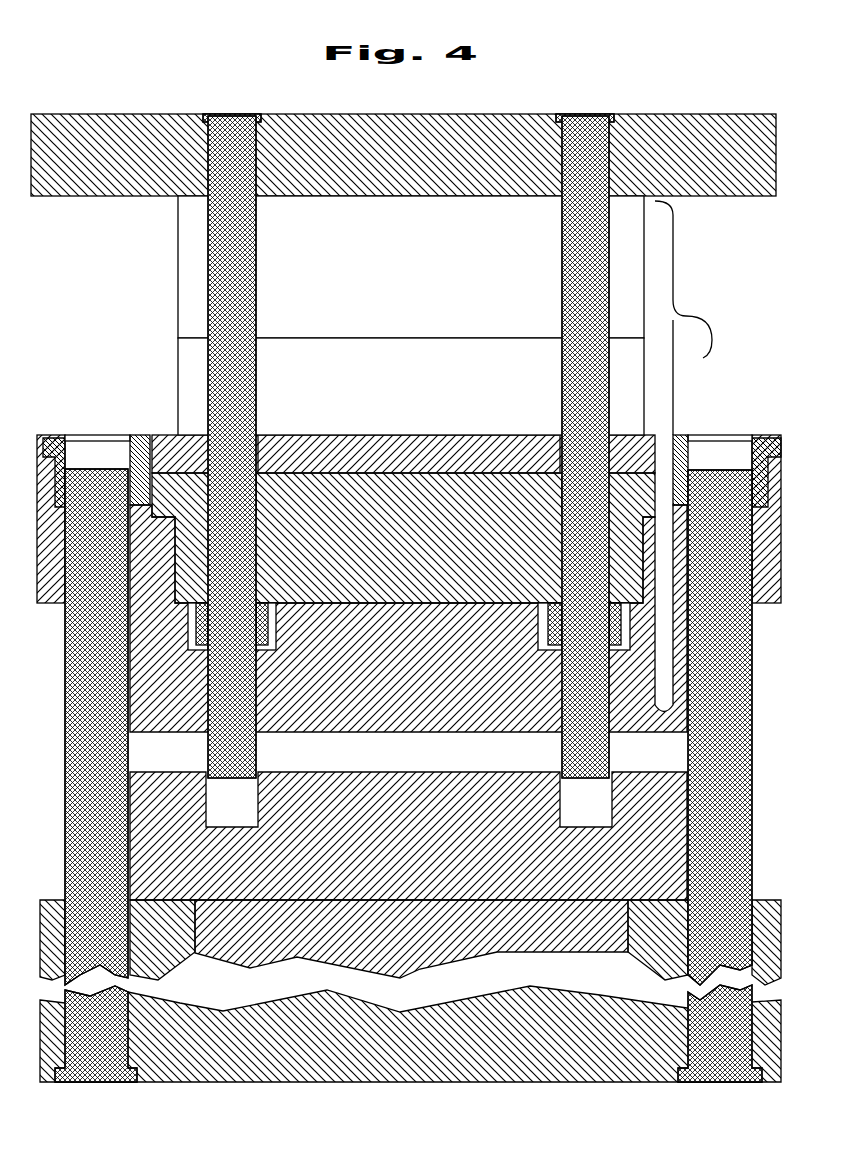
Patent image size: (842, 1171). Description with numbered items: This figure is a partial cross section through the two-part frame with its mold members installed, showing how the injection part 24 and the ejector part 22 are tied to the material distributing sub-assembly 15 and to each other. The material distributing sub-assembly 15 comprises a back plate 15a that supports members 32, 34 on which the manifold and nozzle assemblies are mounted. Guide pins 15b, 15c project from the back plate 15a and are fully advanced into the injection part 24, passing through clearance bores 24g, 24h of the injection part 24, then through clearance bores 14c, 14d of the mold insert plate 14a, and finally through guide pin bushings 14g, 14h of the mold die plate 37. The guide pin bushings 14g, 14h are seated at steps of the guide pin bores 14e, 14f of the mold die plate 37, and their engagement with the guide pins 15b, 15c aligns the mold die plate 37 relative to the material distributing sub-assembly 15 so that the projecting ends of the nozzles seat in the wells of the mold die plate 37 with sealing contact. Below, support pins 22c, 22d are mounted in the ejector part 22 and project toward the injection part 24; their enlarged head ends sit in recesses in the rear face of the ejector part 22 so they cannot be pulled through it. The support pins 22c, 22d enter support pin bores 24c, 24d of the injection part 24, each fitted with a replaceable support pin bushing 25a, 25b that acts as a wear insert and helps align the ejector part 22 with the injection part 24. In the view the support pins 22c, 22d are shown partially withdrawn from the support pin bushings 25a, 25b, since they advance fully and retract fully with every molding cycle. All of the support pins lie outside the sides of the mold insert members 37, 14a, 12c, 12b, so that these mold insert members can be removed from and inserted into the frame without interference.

The material distributing sub-assembly 15 is at (683, 318).
The back plate 15a is at (423, 154).
The guide pin 15b is at (232, 117).
The guide pin 15c is at (585, 117).
The member 32 is at (421, 271).
The member 34 is at (421, 386).
The injection part 24 is at (416, 461).
The support pin bore 24c is at (85, 433).
The support pin bore 24d is at (740, 435).
The clearance bore 24g is at (260, 435).
The clearance bore 24h is at (560, 435).
The support pin bushing 25a is at (140, 437).
The support pin bushing 25b is at (678, 437).
The mold insert plate 14a is at (429, 542).
The clearance bore 14c is at (258, 485).
The clearance bore 14d is at (562, 515).
The guide pin bore 14e is at (268, 650).
The guide pin bore 14f is at (552, 652).
The guide pin bushing 14g is at (270, 612).
The guide pin bushing 14h is at (545, 618).
The mold die plate 37 is at (408, 664).
The mold insert member 12c is at (407, 839).
The mold insert member 12b is at (412, 944).
The ejector part 22 is at (171, 944).
The support pin 22c is at (93, 795).
The support pin 22d is at (735, 820).